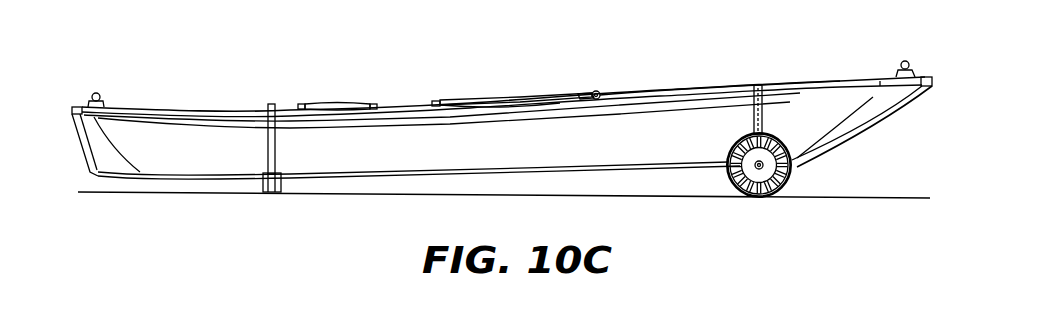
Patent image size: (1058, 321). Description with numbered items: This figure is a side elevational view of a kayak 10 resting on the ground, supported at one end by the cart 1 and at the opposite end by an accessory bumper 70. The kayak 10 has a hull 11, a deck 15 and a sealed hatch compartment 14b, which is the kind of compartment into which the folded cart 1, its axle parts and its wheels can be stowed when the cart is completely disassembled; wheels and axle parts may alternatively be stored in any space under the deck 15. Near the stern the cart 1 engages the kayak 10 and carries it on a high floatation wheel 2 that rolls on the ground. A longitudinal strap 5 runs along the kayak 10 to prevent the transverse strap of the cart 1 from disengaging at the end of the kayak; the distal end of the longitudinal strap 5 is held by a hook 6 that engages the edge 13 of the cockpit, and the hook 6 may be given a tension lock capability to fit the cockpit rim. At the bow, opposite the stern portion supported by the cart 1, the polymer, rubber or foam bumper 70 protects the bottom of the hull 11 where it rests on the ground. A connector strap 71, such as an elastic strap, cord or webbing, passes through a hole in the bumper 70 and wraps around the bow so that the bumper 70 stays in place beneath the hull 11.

The cart 1 is at (800, 174).
The high floatation wheel 2 is at (732, 193).
The longitudinal strap 5 is at (690, 88).
The hook 6 is at (596, 90).
The kayak 10 is at (216, 107).
The hull 11 is at (151, 148).
The edge 13 is at (583, 93).
The hatch compartment 14b is at (342, 103).
The deck 15 is at (417, 112).
The bumper 70 is at (281, 187).
The connector strap 71 is at (268, 104).